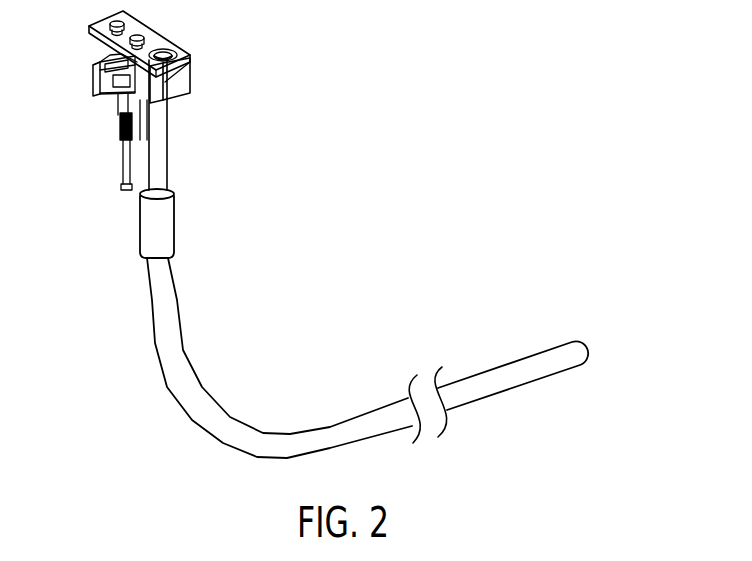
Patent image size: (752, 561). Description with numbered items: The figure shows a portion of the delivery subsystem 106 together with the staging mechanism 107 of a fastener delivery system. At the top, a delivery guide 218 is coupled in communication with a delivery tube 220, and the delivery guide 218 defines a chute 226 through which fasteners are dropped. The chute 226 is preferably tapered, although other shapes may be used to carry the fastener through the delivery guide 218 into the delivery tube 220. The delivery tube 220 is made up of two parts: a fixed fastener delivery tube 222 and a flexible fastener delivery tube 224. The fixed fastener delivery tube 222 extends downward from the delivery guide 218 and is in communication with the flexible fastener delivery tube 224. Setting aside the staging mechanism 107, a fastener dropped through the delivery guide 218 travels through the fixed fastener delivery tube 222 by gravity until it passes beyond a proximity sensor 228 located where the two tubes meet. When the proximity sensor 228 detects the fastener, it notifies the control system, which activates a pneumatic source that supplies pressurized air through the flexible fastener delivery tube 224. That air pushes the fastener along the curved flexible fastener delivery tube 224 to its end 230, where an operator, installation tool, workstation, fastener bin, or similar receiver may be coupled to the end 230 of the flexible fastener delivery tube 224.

The delivery subsystem 106 is at (143, 31).
The chute 226 is at (172, 52).
The delivery guide 218 is at (187, 78).
The staging mechanism 107 is at (112, 96).
The fixed fastener delivery tube 222 is at (159, 153).
The delivery tube 220 is at (219, 201).
The proximity sensor 228 is at (150, 238).
The flexible fastener delivery tube 224 is at (167, 323).
The end 230 is at (580, 348).